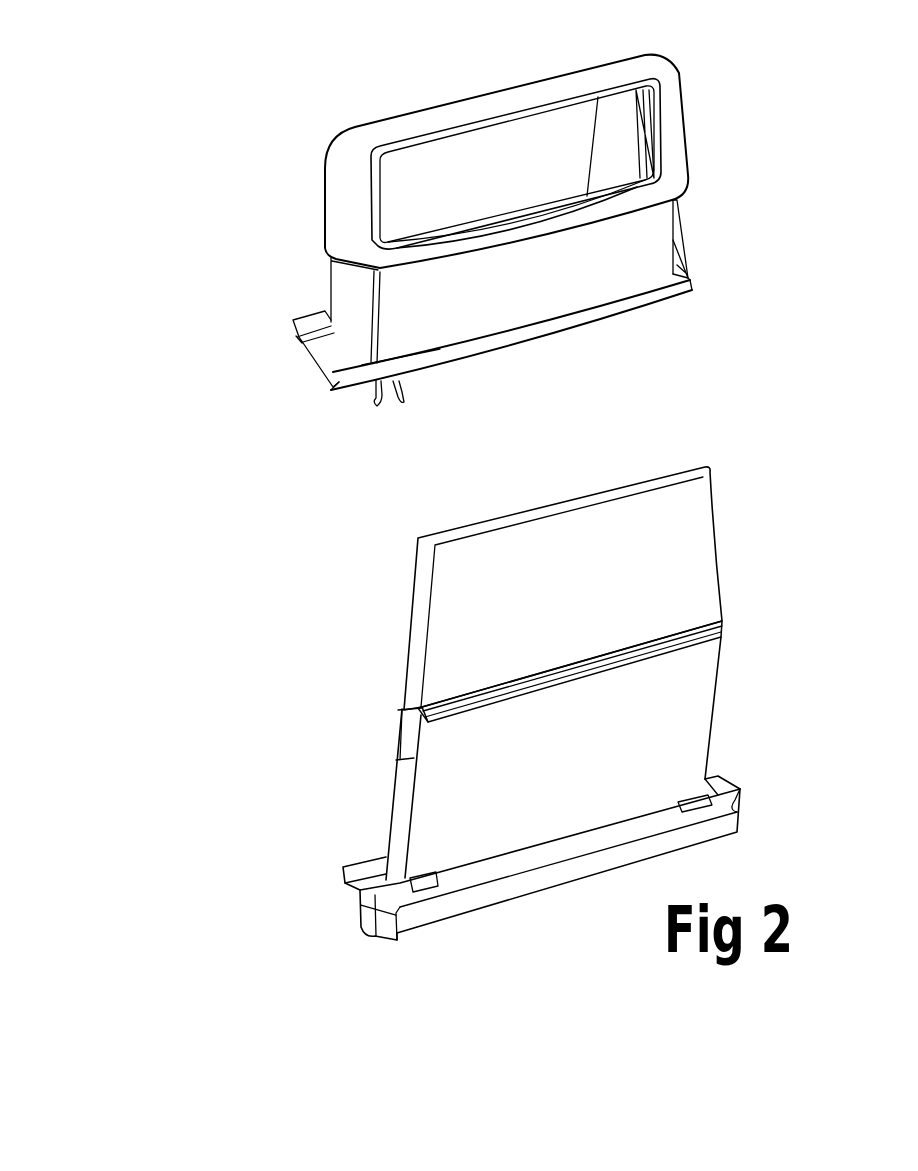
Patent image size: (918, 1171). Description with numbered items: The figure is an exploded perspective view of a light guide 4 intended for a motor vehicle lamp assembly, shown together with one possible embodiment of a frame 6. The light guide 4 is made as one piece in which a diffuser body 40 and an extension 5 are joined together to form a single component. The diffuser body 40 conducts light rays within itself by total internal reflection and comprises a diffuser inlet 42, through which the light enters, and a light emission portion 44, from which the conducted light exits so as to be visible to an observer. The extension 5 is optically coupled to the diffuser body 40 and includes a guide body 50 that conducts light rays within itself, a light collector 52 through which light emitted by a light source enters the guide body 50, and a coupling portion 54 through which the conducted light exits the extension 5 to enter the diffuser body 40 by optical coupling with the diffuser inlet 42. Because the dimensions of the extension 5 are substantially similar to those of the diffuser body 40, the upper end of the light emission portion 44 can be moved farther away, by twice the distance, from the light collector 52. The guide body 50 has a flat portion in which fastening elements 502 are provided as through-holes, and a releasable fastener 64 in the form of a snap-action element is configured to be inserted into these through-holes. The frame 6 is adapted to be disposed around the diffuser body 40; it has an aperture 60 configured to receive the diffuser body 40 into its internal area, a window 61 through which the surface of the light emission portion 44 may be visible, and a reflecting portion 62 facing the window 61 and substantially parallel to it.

The light guide 4 is at (130, 605).
The extension 5 is at (754, 731).
The frame 6 is at (256, 191).
The diffuser body 40 is at (417, 630).
The diffuser inlet 42 is at (402, 676).
The light emission portion 44 is at (710, 576).
The guide body 50 is at (397, 812).
The light collector 52 is at (347, 932).
The coupling portion 54 is at (399, 739).
The aperture 60 is at (660, 314).
The window 61 is at (503, 139).
The reflecting portion 62 is at (560, 172).
The releasable fastener 64 is at (369, 418).
The fastening elements 502 is at (440, 893).